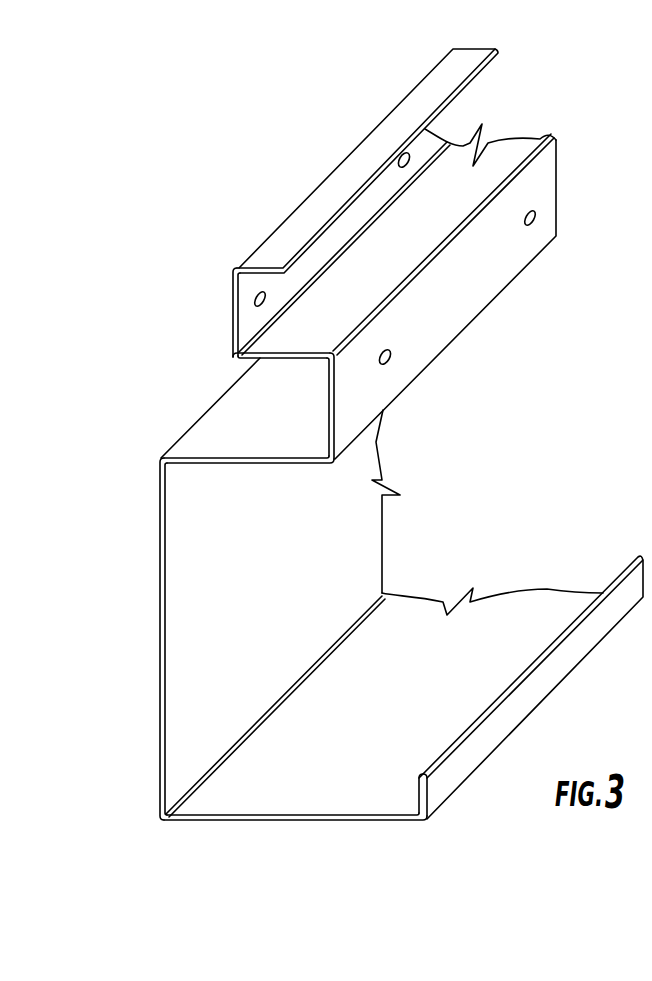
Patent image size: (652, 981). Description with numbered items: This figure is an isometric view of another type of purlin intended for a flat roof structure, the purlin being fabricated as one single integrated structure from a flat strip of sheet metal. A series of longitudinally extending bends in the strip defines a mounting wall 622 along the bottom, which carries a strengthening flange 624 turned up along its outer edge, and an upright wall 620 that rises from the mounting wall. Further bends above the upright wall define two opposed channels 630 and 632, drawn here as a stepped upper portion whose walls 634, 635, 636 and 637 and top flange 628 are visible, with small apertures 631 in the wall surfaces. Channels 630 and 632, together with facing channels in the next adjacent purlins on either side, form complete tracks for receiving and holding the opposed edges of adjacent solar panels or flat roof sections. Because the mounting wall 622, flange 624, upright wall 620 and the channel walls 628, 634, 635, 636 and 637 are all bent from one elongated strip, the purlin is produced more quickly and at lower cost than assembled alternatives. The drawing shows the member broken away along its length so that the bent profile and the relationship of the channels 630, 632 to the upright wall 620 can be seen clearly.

The upright wall 620 is at (158, 665).
The mounting wall 622 is at (313, 822).
The strengthening flange 624 is at (419, 799).
The top flange 628 is at (320, 194).
The channel 630 is at (266, 294).
The aperture 631 is at (537, 218).
The channel 632 is at (560, 98).
The intermediate flange 634 is at (273, 463).
The horizontal web 635 is at (420, 371).
The lower upright wall 636 is at (295, 352).
The upper upright wall 637 is at (232, 311).